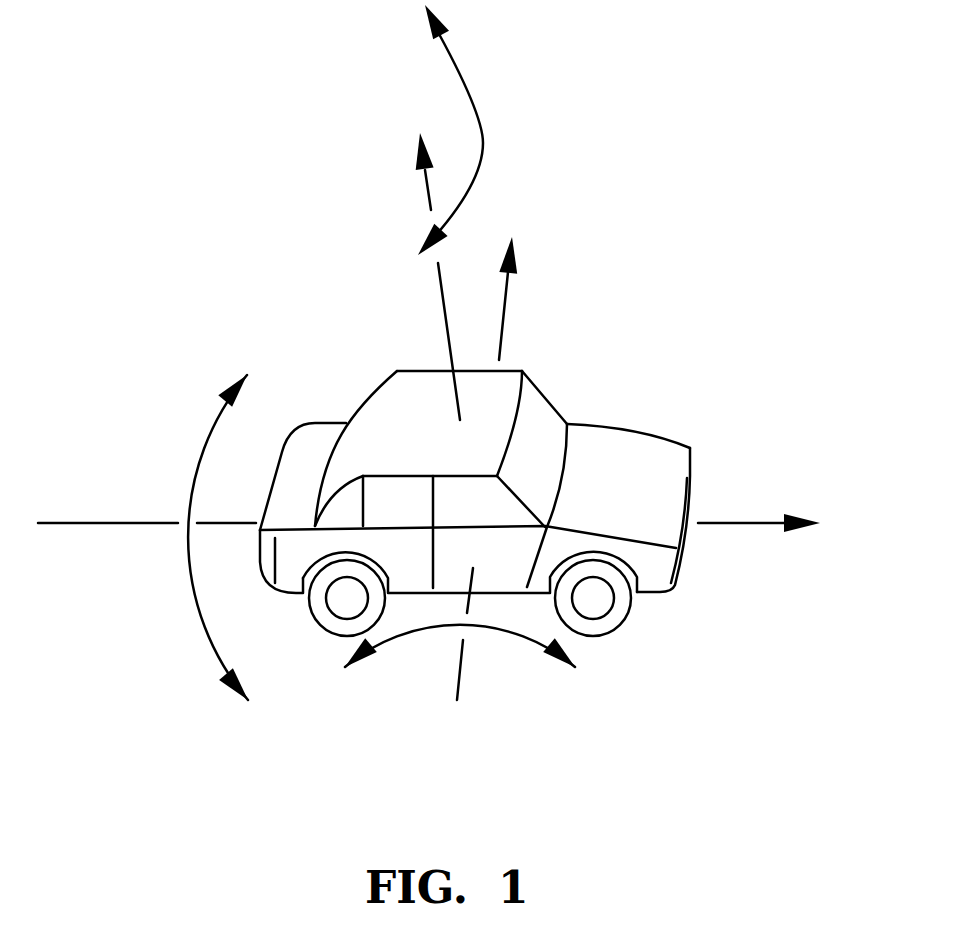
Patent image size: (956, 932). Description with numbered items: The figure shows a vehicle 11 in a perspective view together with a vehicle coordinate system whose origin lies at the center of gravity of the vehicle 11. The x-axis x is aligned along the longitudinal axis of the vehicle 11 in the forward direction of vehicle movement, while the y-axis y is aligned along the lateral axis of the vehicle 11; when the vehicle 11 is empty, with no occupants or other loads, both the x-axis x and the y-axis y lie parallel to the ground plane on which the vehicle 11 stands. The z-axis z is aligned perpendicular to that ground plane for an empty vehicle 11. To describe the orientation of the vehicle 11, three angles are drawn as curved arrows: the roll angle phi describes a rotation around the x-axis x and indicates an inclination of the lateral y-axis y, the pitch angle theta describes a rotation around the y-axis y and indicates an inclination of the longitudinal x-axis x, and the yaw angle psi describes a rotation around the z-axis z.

The vehicle 11 is at (615, 455).
The x-axis x is at (436, 502).
The y-axis y is at (527, 290).
The z-axis z is at (444, 412).
The yaw angle psi is at (483, 130).
The roll angle phi is at (198, 537).
The pitch angle theta is at (460, 694).